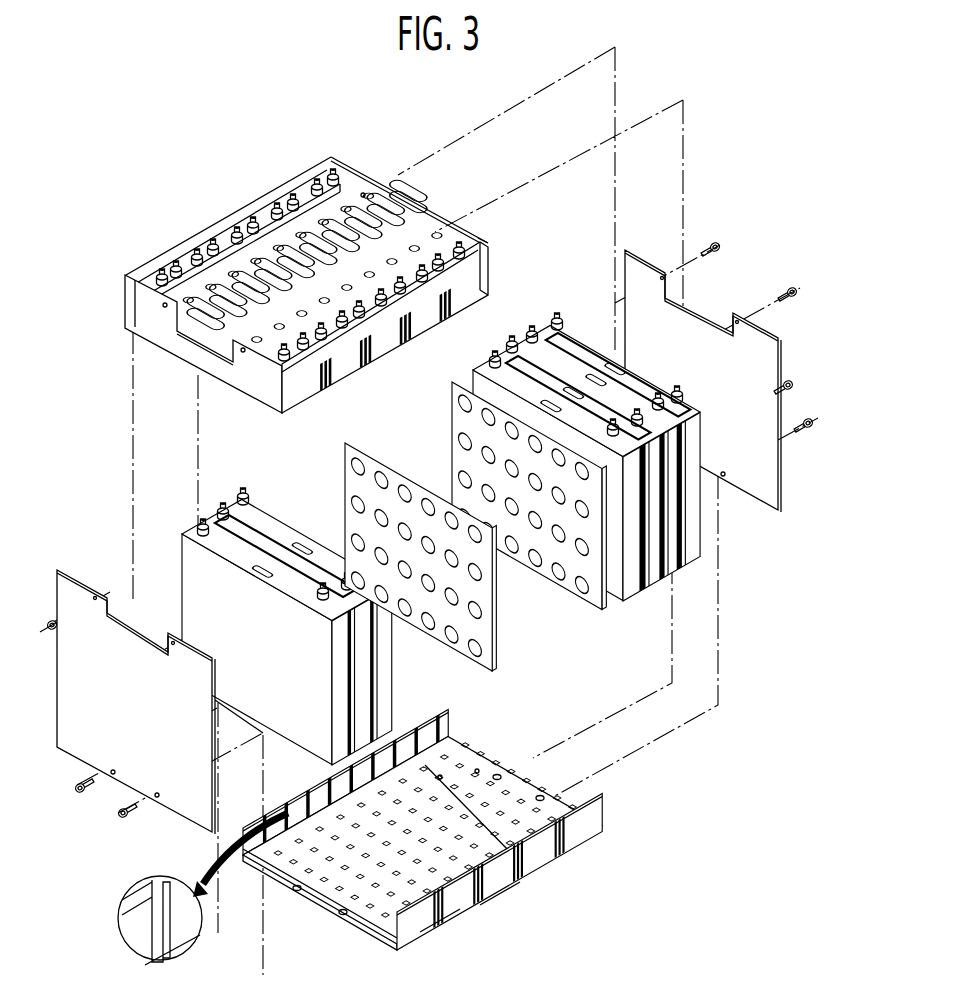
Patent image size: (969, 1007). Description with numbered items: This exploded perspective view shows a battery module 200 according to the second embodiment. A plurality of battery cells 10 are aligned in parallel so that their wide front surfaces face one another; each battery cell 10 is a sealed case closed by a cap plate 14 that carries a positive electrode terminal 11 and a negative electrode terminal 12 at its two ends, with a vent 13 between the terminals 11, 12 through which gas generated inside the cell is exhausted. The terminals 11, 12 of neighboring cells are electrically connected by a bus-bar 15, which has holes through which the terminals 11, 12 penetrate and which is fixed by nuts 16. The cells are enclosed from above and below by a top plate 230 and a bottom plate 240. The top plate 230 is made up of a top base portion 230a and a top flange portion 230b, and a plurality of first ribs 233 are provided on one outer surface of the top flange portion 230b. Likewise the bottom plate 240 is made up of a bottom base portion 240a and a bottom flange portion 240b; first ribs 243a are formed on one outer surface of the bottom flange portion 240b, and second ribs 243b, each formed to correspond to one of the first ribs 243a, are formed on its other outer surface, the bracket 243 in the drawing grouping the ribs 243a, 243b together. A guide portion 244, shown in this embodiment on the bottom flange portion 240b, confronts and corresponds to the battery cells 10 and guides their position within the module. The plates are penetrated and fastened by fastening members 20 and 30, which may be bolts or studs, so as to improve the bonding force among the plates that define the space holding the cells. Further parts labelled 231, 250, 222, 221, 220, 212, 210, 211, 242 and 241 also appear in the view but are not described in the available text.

The battery module 200 is at (224, 171).
The nuts 16 is at (158, 268).
The coupling hole of upper cover 231 is at (366, 193).
The top base portion 230a is at (490, 267).
The top flange portion 230b is at (490, 284).
The top plate 230 is at (556, 258).
The first ribs 233 is at (372, 352).
The positive electrode terminal 11 is at (553, 318).
The cap plate 14 is at (618, 375).
The vent 13 is at (589, 352).
The negative electrode terminal 12 is at (682, 382).
The bus-bar 15 is at (286, 556).
The end plate with holes 250 is at (603, 605).
The battery cell 10 is at (388, 690).
The fastening member 30 is at (798, 287).
The bracket of second side plate 222 is at (704, 326).
The fastening member 20 is at (811, 421).
The coupling hole of second side plate 221 is at (724, 478).
The second side plate 220 is at (778, 512).
The bracket of first side plate 212 is at (160, 633).
The first side plate 210 is at (95, 740).
The coupling hole of first side plate 211 is at (157, 798).
The coupling hole of bottom plate 242 is at (477, 771).
The protrusion of bottom plate 241 is at (540, 796).
The guide portion 244 is at (312, 800).
The first ribs 243a is at (496, 874).
The second ribs 243b is at (572, 843).
The slits of bottom plate wall 243 is at (634, 848).
The bottom flange portion 240b is at (500, 883).
The bottom base portion 240a is at (438, 884).
The bottom plate 240 is at (568, 927).